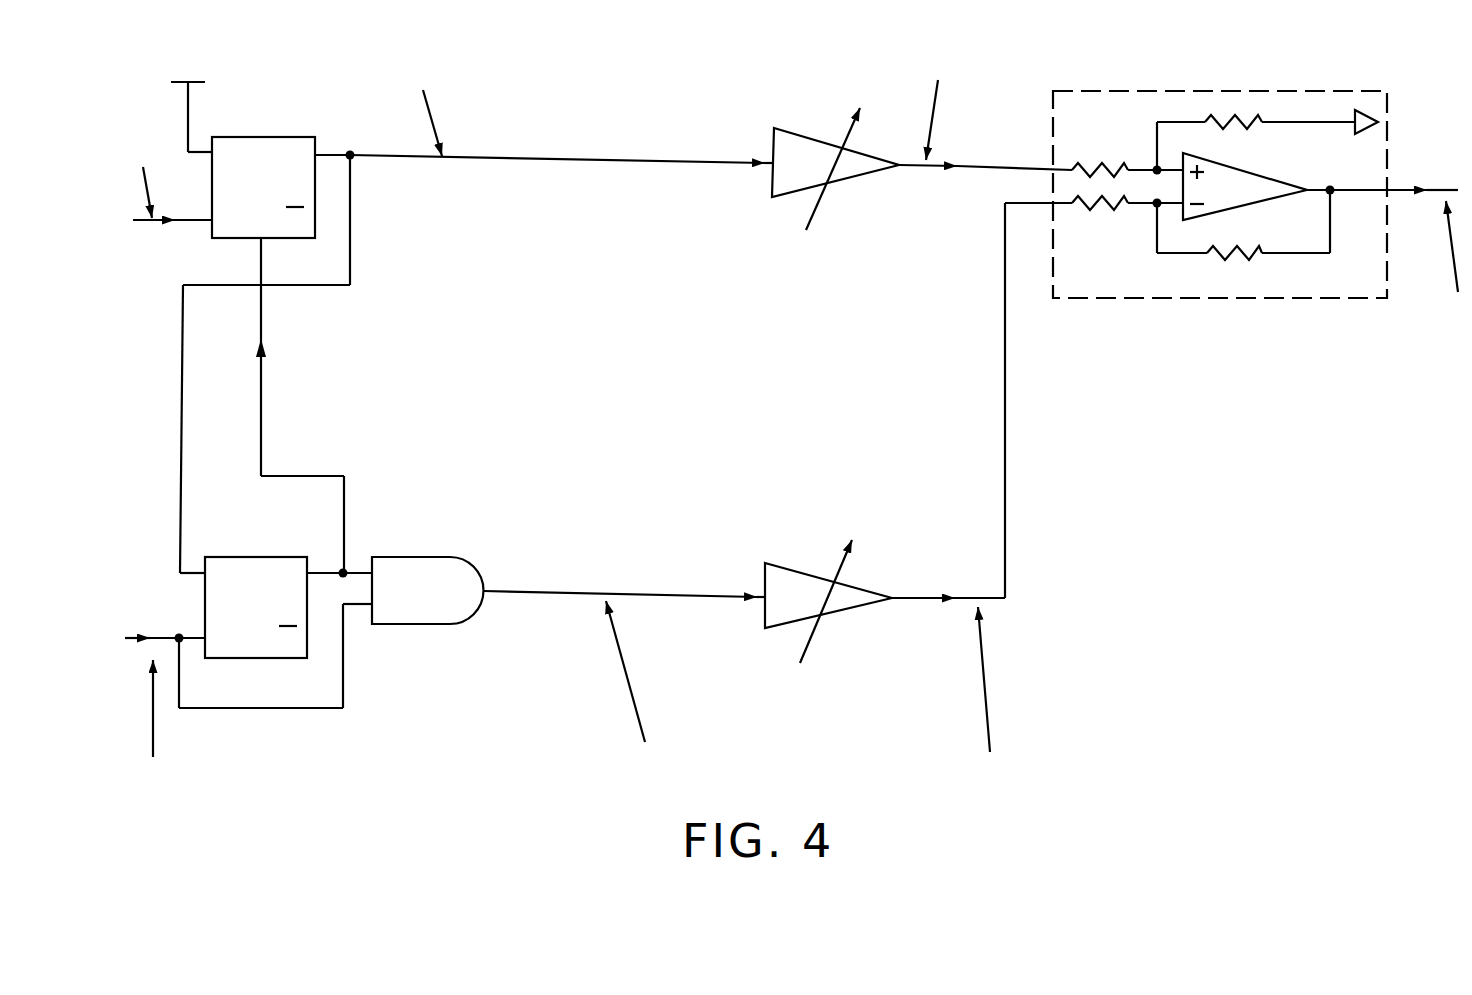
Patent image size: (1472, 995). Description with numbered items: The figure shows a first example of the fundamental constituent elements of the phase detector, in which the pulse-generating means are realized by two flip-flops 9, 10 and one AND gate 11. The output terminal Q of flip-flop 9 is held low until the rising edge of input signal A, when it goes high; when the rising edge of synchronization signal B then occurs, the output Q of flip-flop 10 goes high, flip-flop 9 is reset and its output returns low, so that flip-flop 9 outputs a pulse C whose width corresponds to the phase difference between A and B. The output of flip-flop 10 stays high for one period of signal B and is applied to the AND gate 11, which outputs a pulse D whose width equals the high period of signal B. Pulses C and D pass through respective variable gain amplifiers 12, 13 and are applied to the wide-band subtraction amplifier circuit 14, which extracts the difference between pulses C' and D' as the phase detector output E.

The flip-flop 9 is at (274, 136).
The flip-flop 10 is at (262, 663).
The AND gate 11 is at (426, 629).
The variable gain amplifier 12 is at (802, 136).
The variable gain amplifier 13 is at (858, 612).
The wide-band subtraction amplifier circuit 14 is at (1179, 301).